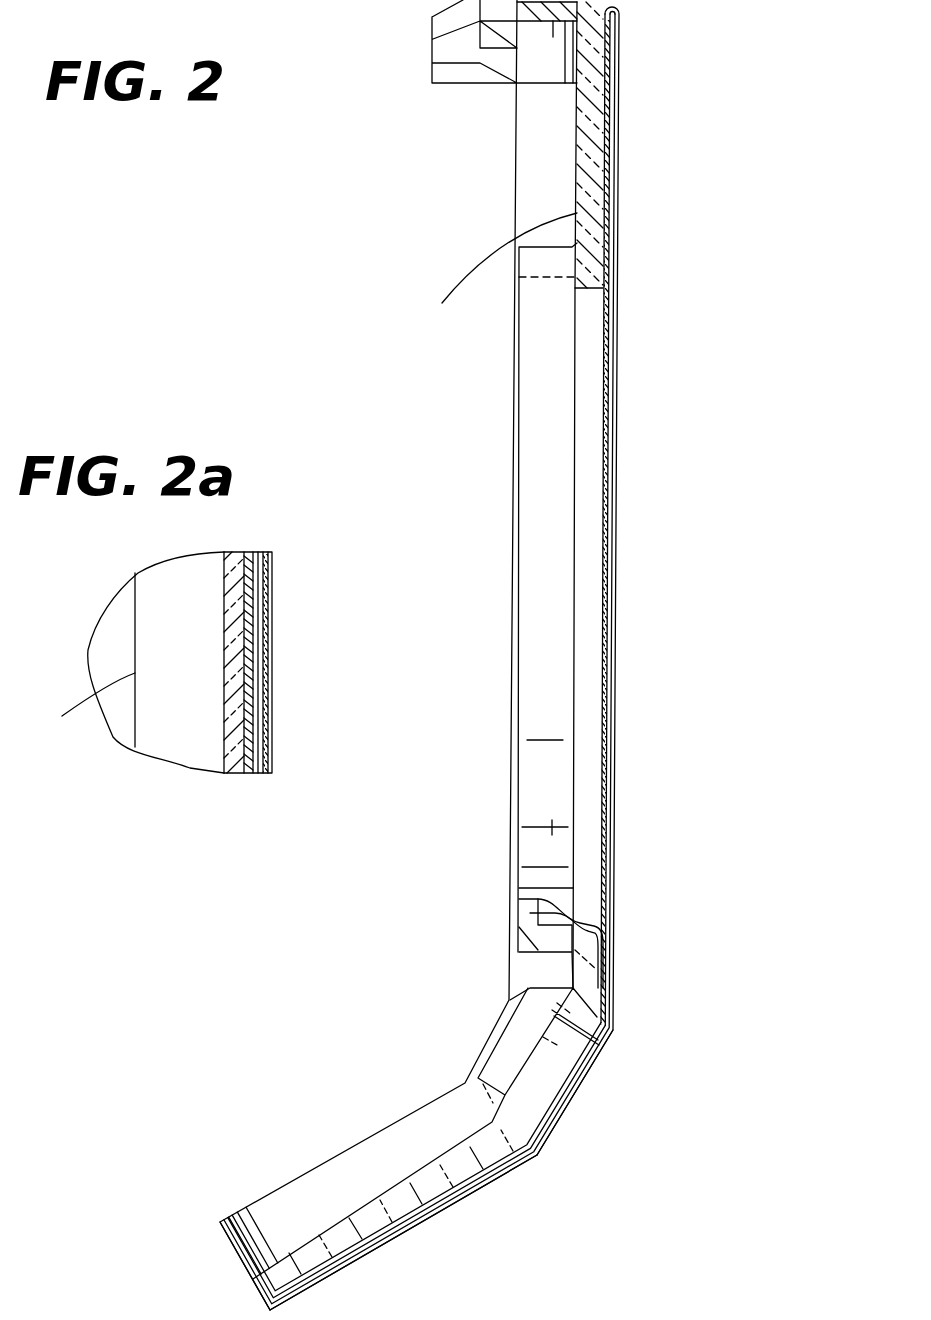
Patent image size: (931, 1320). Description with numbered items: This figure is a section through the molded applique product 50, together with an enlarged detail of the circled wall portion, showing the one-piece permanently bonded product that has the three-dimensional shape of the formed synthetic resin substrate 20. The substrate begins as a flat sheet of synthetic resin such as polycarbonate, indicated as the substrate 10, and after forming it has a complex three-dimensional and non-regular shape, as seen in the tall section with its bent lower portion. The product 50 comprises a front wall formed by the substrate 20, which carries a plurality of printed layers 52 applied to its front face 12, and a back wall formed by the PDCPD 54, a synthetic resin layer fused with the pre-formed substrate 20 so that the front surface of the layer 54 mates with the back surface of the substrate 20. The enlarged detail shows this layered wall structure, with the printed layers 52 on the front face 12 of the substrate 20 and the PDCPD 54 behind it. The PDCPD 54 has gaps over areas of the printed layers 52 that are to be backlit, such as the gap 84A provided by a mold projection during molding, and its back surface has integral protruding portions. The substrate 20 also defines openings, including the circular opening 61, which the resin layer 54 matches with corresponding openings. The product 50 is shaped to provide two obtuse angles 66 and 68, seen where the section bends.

In FIG. 2, the molded applique product 50 is at (646, 241).
In FIG. 2, the substrate 10 is at (601, 458).
In FIG. 2a, the substrate 10 is at (236, 550).
In FIG. 2, the printed layers 52 is at (606, 377).
In FIG. 2a, the printed layers 52 is at (270, 613).
In FIG. 2a, the front face 12 is at (250, 660).
In FIG. 2, the gap 84A is at (596, 540).
In FIG. 2a, the gap 84A is at (173, 753).
In FIG. 2, the PDCPD 54 is at (488, 282).
In FIG. 2a, the PDCPD 54 is at (85, 718).
In FIG. 2, the circular opening 61 is at (603, 941).
In FIG. 2, the obtuse angle 66 is at (615, 1034).
In FIG. 2, the obtuse angle 68 is at (545, 1163).
In FIG. 2a, the formed synthetic resin substrate 20 is at (243, 780).